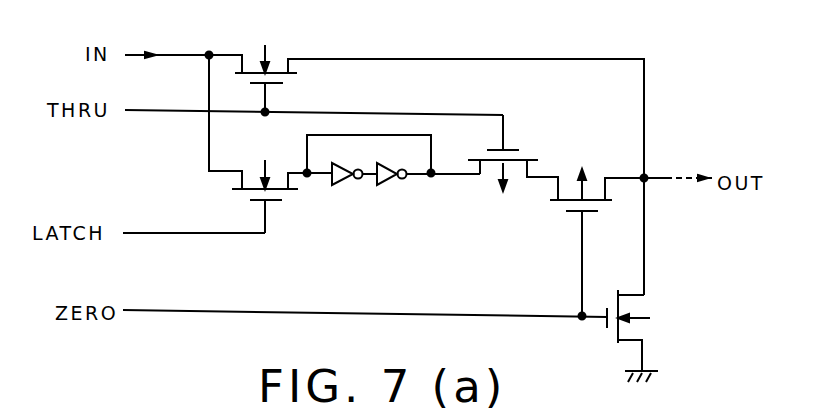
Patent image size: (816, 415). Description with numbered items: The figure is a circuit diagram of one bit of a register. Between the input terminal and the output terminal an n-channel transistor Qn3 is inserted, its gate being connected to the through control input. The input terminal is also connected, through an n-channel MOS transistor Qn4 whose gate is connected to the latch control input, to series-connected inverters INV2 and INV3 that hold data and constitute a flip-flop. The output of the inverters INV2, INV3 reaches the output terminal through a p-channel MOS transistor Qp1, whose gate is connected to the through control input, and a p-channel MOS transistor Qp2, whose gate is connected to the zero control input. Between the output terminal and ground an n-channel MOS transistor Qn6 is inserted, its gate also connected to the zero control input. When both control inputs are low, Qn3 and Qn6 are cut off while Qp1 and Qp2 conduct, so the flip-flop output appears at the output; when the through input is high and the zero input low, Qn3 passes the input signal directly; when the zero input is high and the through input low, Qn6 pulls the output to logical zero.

The n-channel transistor Qn3 is at (266, 60).
The n-channel MOS transistor Qn4 is at (282, 183).
The inverter INV2 is at (340, 192).
The inverter INV3 is at (428, 192).
The p-channel MOS transistor Qp1 is at (513, 171).
The p-channel MOS transistor Qp2 is at (597, 225).
The n-channel MOS transistor Qn6 is at (659, 336).